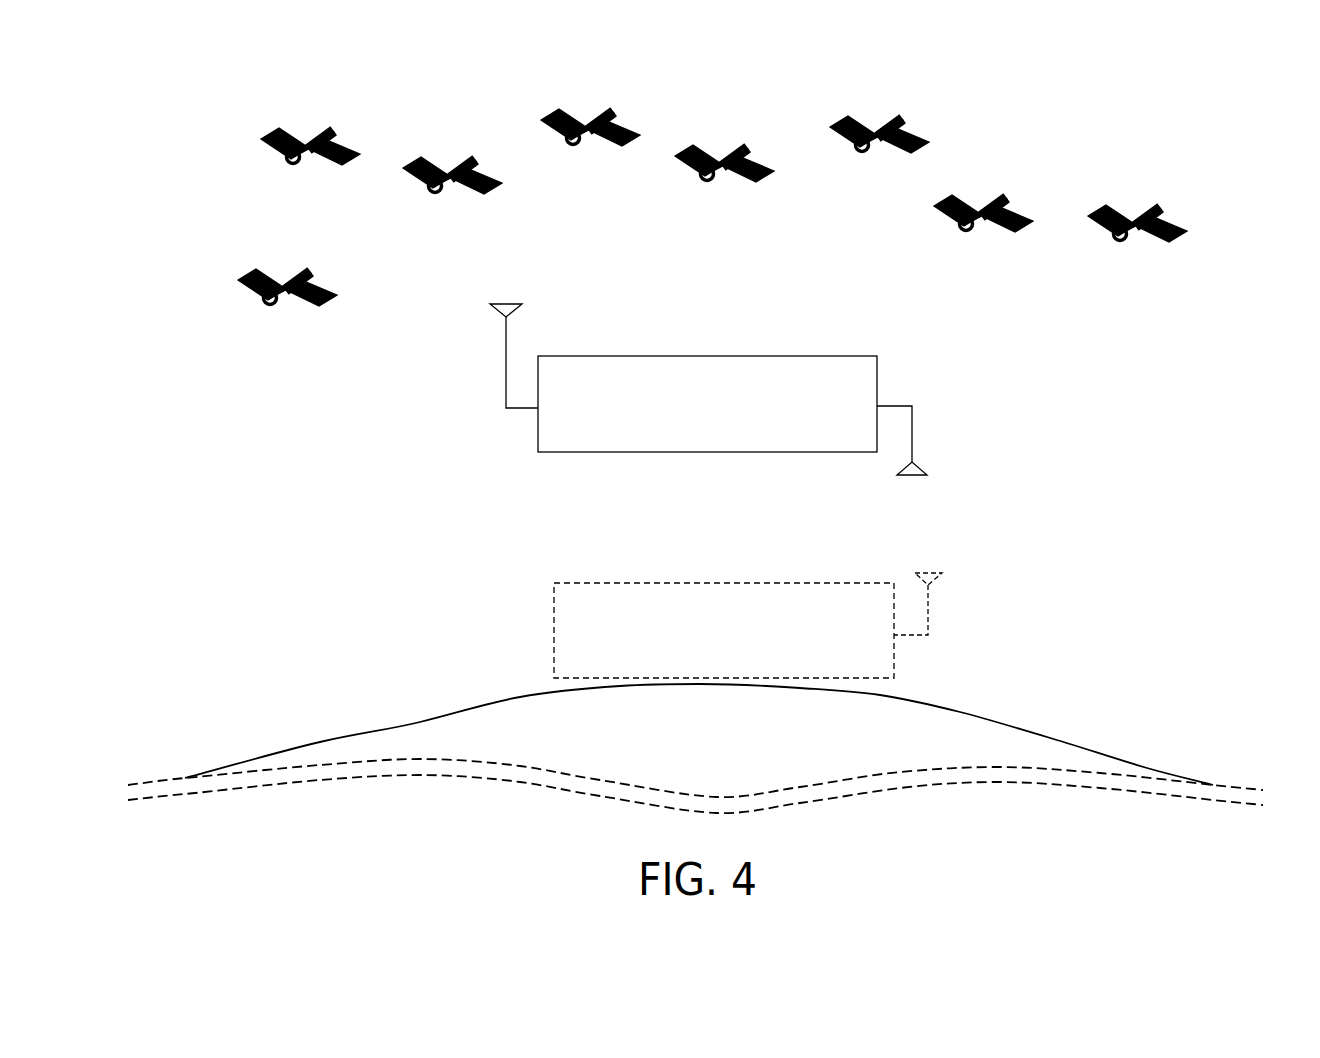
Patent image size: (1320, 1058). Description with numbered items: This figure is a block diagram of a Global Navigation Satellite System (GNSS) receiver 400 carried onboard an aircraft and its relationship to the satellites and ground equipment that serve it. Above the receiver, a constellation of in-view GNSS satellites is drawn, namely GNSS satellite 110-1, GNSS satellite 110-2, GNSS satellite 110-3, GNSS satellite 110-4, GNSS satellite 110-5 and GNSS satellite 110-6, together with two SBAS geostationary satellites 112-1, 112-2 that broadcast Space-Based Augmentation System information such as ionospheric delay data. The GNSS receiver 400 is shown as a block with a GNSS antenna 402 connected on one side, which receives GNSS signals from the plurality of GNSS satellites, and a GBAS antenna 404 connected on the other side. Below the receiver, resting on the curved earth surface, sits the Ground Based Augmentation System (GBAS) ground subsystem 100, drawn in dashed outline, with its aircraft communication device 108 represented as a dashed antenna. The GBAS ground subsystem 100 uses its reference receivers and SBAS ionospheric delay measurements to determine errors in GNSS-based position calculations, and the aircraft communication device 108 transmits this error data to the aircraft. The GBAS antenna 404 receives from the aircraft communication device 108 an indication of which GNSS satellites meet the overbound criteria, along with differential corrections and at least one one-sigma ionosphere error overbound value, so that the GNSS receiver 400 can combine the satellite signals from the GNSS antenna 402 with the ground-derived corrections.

The Ground Based Augmentation System (GBAS) ground subsystem 100 is at (710, 666).
The aircraft communication device 108 is at (931, 572).
The GNSS satellite 110-1 is at (312, 275).
The GNSS satellite 110-2 is at (352, 112).
The GNSS satellite 110-3 is at (615, 115).
The GNSS satellite 110-4 is at (763, 128).
The GNSS satellite 110-5 is at (1021, 178).
The GNSS satellite 110-6 is at (1175, 190).
The SBAS geostationary satellite 112-1 is at (477, 164).
The SBAS geostationary satellite 112-2 is at (917, 100).
The Global Navigation Satellite System (GNSS) receiver 400 is at (721, 439).
The GNSS antenna 402 is at (504, 303).
The GBAS antenna 404 is at (912, 482).